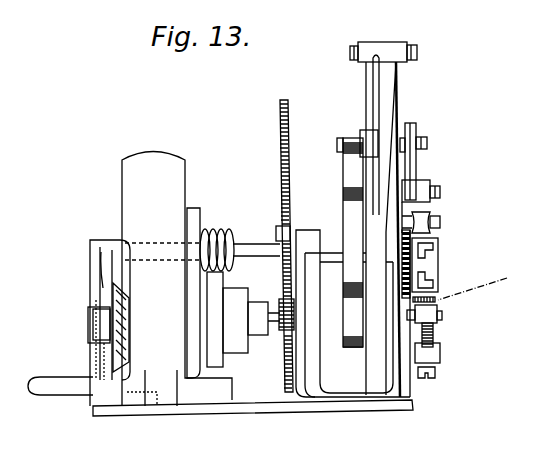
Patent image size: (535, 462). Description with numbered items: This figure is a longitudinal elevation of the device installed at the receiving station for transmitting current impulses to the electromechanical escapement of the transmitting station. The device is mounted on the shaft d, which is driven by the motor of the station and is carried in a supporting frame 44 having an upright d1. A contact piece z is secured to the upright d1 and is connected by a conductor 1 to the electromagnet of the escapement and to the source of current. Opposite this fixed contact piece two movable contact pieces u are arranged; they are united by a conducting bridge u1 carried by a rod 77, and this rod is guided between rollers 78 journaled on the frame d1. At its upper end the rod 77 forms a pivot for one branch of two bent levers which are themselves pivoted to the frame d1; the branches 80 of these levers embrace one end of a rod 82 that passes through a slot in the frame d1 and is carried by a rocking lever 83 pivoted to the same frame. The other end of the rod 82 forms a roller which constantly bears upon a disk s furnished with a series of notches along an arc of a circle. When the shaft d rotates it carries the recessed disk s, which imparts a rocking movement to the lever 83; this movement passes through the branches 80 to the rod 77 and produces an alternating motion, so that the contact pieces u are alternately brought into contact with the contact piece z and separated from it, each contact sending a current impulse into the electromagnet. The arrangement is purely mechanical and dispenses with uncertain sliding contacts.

The supporting frame 44 is at (291, 403).
The shaft d is at (248, 250).
The recessed disk s is at (352, 204).
The upright of the supporting frame d1 is at (394, 219).
The rocking lever 83 is at (367, 86).
The rod 82 is at (338, 140).
The branches of the bent levers 80 is at (416, 165).
The rod 77 is at (437, 192).
The rollers 78 is at (458, 317).
The contact piece z is at (437, 300).
The conductor wire 1 is at (472, 280).
The contact pieces u is at (437, 338).
The conducting bridge u1 is at (430, 355).